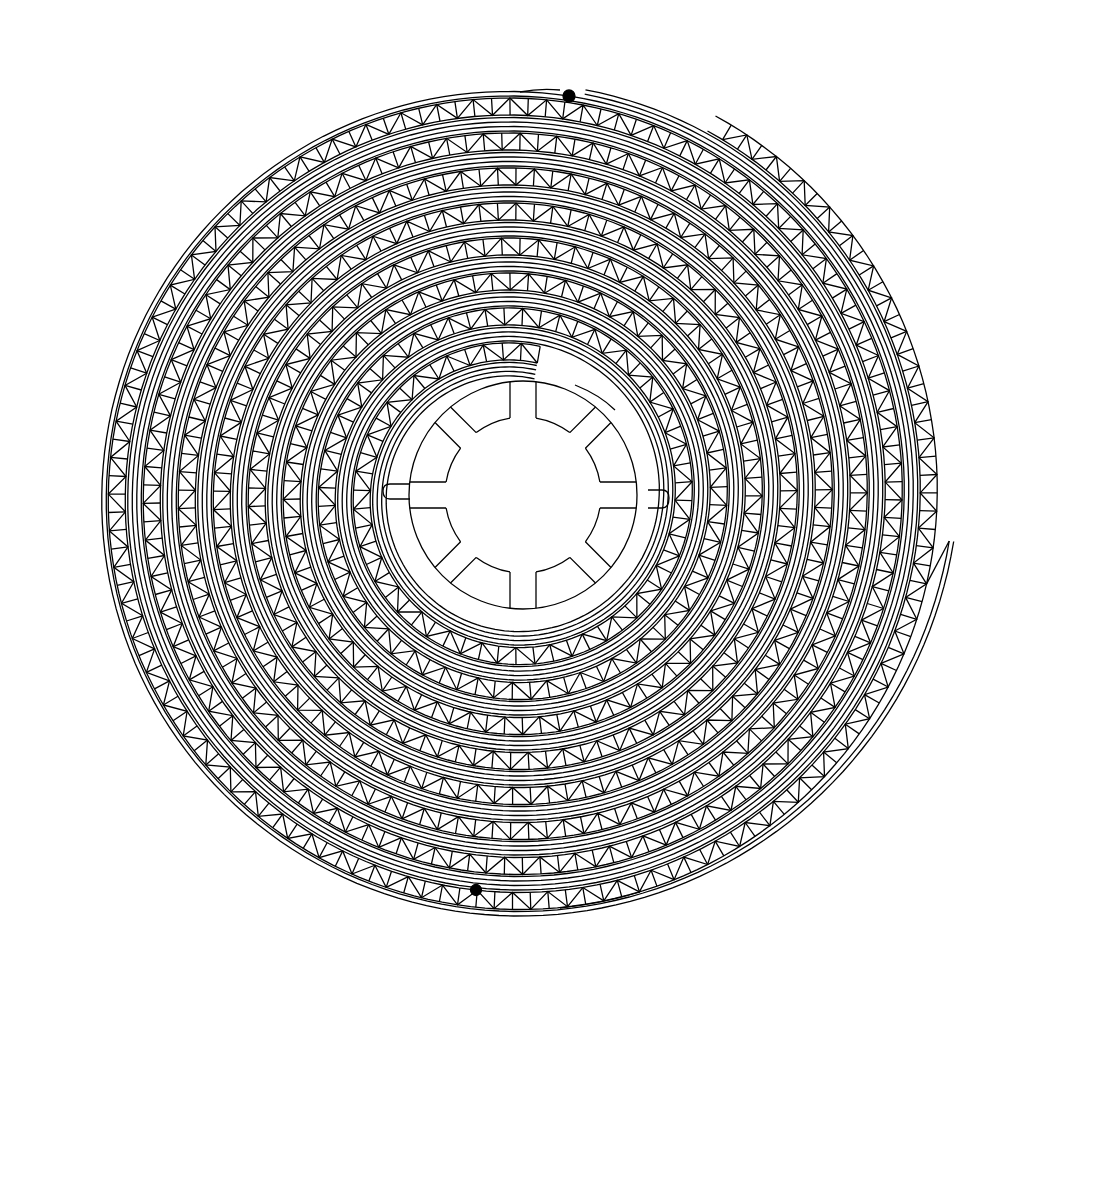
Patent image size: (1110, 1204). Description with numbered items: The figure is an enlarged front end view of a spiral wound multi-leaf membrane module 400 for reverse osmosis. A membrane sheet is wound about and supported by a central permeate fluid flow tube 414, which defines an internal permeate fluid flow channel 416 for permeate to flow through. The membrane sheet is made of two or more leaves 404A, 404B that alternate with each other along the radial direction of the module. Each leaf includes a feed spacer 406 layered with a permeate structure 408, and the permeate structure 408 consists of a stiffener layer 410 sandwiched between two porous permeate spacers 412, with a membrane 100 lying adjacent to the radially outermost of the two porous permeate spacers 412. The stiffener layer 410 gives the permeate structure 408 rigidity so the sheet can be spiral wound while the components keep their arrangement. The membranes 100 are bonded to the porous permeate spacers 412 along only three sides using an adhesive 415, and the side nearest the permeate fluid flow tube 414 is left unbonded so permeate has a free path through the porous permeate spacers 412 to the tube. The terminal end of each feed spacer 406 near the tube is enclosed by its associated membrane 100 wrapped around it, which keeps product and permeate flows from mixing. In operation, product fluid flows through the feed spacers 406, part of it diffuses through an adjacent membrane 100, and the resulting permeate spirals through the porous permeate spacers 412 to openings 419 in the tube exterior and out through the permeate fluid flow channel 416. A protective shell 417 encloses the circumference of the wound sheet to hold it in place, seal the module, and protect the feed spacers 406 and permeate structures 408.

The membrane 100 is at (659, 137).
The membrane module 400 is at (845, 183).
The leaf 404A is at (394, 483).
The leaf 404B is at (650, 500).
The feed spacer 406 is at (900, 358).
The permeate structure 408 is at (556, 92).
The stiffener layer 410 is at (745, 173).
The porous permeate spacer 412 is at (722, 174).
The permeate fluid flow tube 414 is at (607, 462).
The adhesive 415 is at (570, 90).
The permeate fluid flow channel 416 is at (509, 523).
The protective shell 417 is at (600, 906).
The openings 419 is at (588, 432).